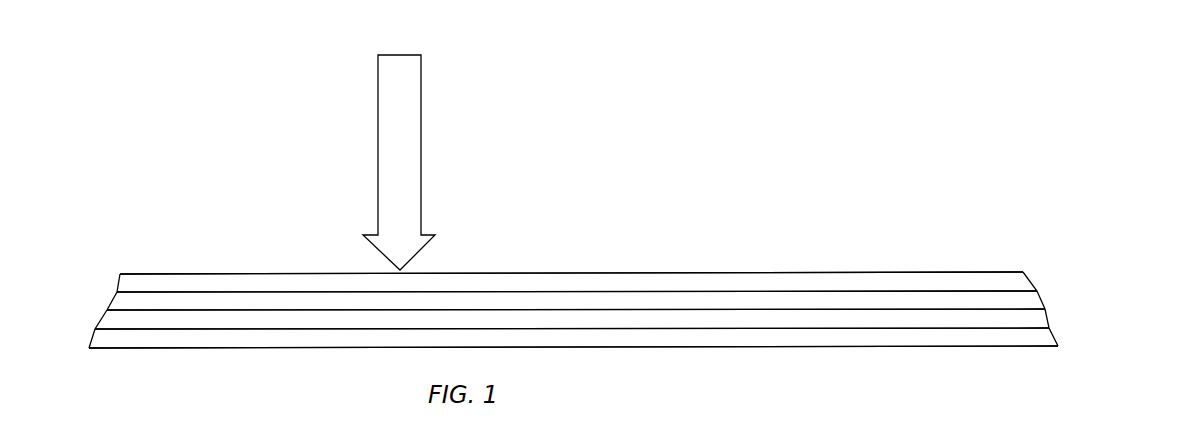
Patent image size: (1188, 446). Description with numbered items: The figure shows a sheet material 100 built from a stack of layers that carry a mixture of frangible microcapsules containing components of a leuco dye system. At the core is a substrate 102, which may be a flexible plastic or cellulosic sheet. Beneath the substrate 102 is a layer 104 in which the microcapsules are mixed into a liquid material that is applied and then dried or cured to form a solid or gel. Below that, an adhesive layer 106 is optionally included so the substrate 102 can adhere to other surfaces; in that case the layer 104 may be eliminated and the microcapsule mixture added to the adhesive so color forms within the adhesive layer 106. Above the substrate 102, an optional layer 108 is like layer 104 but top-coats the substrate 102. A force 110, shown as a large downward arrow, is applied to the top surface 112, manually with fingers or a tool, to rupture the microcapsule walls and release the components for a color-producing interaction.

The sheet material 100 is at (921, 226).
The substrate 102 is at (1038, 292).
The layer 104 is at (1047, 313).
The adhesive layer 106 is at (1056, 340).
The layer 108 is at (1028, 275).
The force 110 is at (423, 72).
The top surface 112 is at (510, 271).